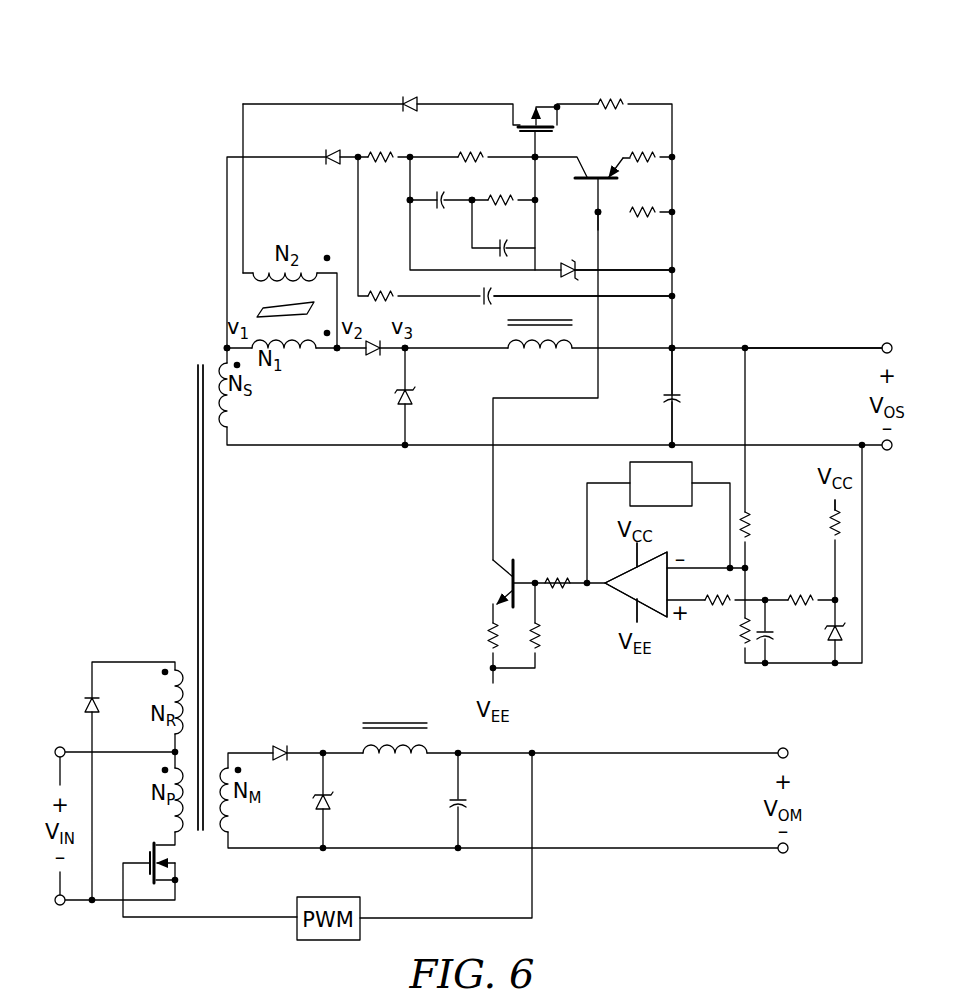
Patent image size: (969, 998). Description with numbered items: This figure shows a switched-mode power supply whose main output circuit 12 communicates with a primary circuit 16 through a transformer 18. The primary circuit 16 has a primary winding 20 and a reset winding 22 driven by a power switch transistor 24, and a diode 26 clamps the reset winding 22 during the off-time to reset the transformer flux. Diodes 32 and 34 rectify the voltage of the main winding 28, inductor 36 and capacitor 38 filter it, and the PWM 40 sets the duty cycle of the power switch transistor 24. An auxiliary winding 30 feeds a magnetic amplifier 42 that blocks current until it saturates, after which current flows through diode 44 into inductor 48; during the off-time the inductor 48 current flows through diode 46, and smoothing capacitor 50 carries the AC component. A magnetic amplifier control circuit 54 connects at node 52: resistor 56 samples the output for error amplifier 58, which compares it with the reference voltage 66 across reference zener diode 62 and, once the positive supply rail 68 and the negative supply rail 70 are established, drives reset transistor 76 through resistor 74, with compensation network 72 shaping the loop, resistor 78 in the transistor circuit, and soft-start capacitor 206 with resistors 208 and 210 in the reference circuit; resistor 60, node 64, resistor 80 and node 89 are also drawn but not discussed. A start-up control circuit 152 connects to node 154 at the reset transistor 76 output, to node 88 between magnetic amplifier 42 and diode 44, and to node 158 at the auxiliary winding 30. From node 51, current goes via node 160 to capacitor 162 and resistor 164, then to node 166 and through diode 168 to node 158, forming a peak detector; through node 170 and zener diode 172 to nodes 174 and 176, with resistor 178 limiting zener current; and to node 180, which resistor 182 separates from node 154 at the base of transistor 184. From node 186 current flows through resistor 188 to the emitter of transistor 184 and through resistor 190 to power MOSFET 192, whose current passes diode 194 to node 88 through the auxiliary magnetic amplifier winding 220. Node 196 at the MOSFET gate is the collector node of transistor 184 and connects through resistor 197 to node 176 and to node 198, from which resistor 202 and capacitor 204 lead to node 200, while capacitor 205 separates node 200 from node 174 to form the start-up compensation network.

The main output circuit 12 is at (813, 214).
The primary circuit 16 is at (80, 650).
The transformer 18 is at (210, 550).
The primary winding 20 is at (172, 825).
The reset winding 22 is at (160, 677).
The power switch transistor 24 is at (181, 865).
The diode 26 is at (86, 707).
The main winding 28 is at (232, 826).
The auxiliary winding 30 is at (231, 416).
The diode 32 is at (282, 742).
The diode 34 is at (330, 800).
The inductor 36 is at (366, 722).
The capacitor 38 is at (447, 803).
The PWM 40 is at (362, 906).
The magnetic amplifier 42 is at (294, 348).
The diode 44 is at (374, 358).
The diode 46 is at (412, 398).
The inductor 48 is at (544, 347).
The smoothing capacitor 50 is at (665, 399).
The node 51 is at (675, 347).
The node 52 is at (788, 347).
The magnetic amplifier control circuit 54 is at (838, 687).
The resistor 56 is at (747, 518).
The error amplifier 58 is at (636, 584).
The feedback resistor 60 is at (742, 642).
The reference zener diode 62 is at (830, 640).
The supply node 64 is at (833, 502).
The reference voltage 66 is at (833, 529).
The VCC voltage rail 68 is at (636, 554).
The VEE voltage rail 70 is at (636, 618).
The compensation network 72 is at (629, 481).
The resistor 74 is at (561, 589).
The reset transistor 76 is at (515, 558).
The resistor 78 is at (489, 636).
The bias resistor 80 is at (490, 669).
The node 88 is at (338, 354).
The node v3 89 is at (408, 353).
The start-up control circuit 152 is at (698, 112).
The node 154 is at (601, 218).
The node 158 is at (224, 347).
The node 160 is at (676, 296).
The capacitor 162 is at (482, 302).
The resistor 164 is at (384, 290).
The node 166 is at (360, 152).
The diode 168 is at (326, 151).
The node 170 is at (676, 270).
The zener diode 172 is at (569, 262).
The node 174 is at (410, 214).
The node 176 is at (413, 161).
The resistor 178 is at (408, 203).
The node 180 is at (676, 212).
The resistor 182 is at (645, 205).
The transistor 184 is at (597, 163).
The node 186 is at (676, 157).
The resistor 188 is at (645, 150).
The resistor 190 is at (614, 100).
The power MOSFET 192 is at (539, 96).
The diode 194 is at (418, 99).
The node 196 is at (533, 152).
The resistor 197 is at (472, 150).
The node 198 is at (595, 212).
The node 200 is at (476, 206).
The resistor 202 is at (503, 195).
The capacitor 204 is at (497, 250).
The capacitor 205 is at (440, 206).
The soft-start capacitor 206 is at (772, 636).
The resistor 208 is at (720, 606).
The resistor 210 is at (803, 595).
The auxiliary magnetic amplifier winding 220 is at (314, 262).